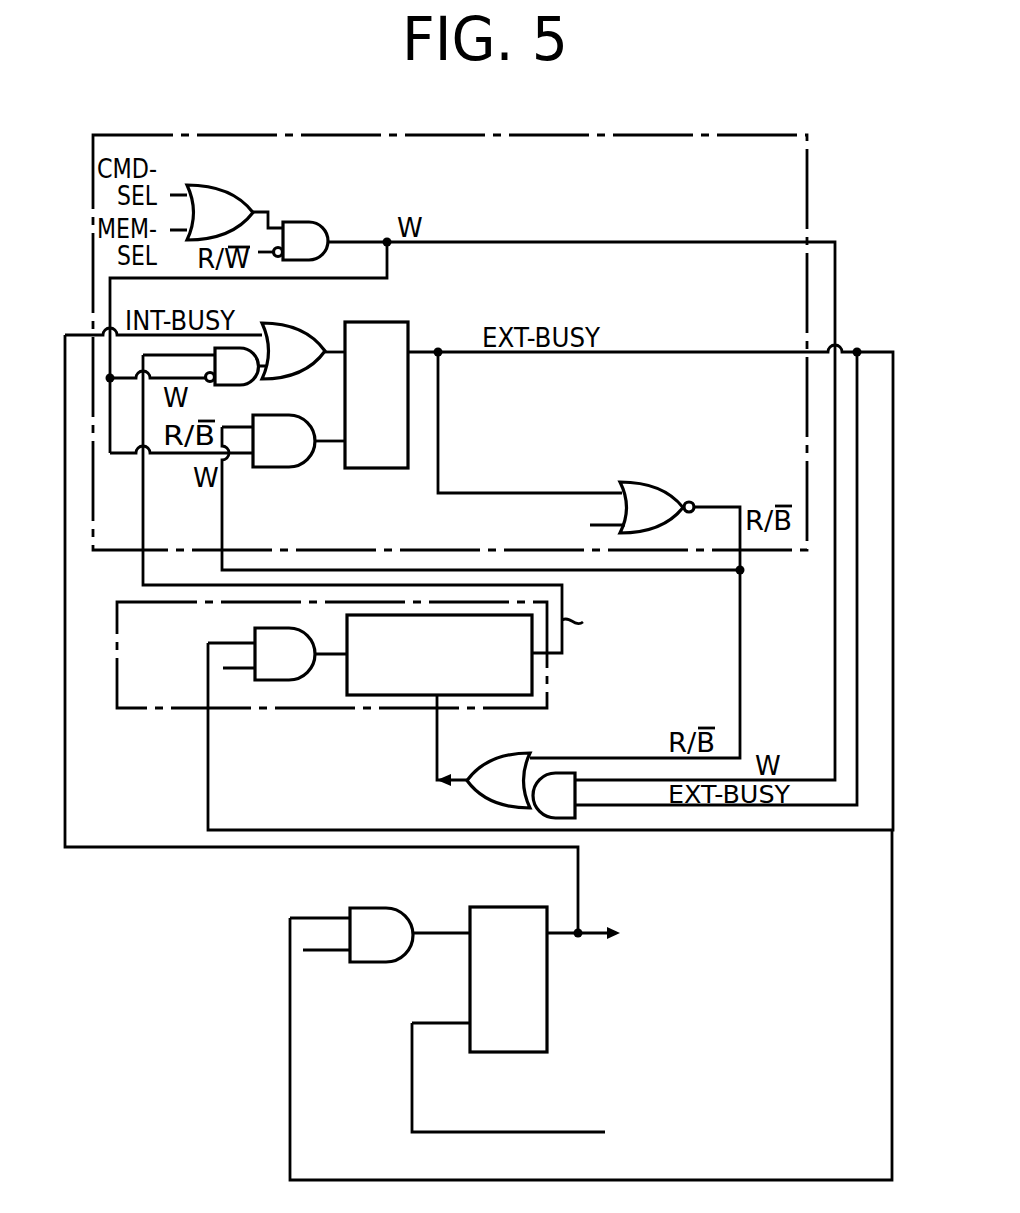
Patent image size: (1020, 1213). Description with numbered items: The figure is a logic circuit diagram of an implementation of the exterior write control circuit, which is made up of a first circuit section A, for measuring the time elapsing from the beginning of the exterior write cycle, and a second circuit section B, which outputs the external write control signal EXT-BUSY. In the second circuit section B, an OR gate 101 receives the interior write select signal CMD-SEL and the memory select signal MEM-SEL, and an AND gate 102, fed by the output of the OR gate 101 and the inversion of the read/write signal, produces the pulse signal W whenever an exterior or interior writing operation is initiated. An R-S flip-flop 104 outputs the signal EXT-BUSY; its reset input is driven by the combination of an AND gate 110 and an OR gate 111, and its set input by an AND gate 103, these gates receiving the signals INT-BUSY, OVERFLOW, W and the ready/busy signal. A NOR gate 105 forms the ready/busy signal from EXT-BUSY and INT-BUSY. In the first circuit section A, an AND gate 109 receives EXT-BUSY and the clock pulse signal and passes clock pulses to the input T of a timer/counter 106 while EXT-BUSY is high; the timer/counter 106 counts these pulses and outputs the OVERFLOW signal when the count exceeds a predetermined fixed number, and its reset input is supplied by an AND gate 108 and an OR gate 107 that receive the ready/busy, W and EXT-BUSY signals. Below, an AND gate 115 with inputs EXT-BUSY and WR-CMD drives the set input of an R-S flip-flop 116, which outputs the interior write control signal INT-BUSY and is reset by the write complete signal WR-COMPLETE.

The OR gate 101 is at (230, 186).
The AND gate 102 is at (303, 222).
The AND gate 103 is at (275, 467).
The R-S flip-flop 104 is at (375, 322).
The NOR gate 105 is at (648, 482).
The timer/counter 106 is at (378, 695).
The OR gate 107 is at (520, 753).
The AND gate 108 is at (540, 818).
The AND gate 109 is at (285, 680).
The AND gate 110 is at (238, 385).
The OR gate 111 is at (283, 323).
The AND gate 115 is at (373, 908).
The R-S flip-flop 116 is at (500, 907).
The first circuit section A is at (547, 692).
The second circuit section B is at (805, 140).